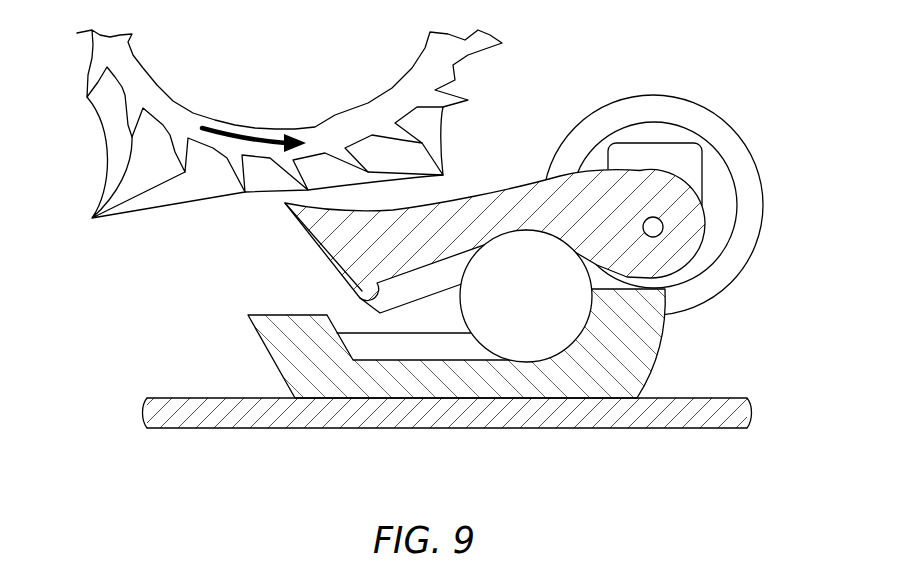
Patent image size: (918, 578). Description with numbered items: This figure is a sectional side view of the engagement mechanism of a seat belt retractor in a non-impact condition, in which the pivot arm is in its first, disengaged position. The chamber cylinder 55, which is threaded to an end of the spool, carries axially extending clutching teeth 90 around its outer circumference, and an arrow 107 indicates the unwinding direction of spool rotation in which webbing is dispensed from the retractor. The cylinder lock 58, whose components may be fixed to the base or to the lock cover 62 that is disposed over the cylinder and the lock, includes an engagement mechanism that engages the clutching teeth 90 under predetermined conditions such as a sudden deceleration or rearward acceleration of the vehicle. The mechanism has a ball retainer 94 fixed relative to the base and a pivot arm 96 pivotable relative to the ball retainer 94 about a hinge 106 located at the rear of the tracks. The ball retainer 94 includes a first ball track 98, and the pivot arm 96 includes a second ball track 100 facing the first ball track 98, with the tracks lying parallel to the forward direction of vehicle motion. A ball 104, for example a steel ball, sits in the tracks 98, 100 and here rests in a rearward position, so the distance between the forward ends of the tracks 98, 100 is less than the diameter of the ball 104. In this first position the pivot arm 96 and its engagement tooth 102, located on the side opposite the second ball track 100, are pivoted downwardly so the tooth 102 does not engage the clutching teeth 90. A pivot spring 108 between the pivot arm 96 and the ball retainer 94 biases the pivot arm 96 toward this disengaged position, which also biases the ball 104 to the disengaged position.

The chamber cylinder 55 is at (153, 72).
The cylinder lock 58 is at (660, 37).
The lock cover 62 is at (687, 430).
The clutching teeth 90 is at (270, 165).
The ball retainer 94 is at (277, 370).
The pivot arm 96 is at (511, 185).
The first ball track 98 is at (360, 360).
The second ball track 100 is at (360, 297).
The engagement tooth 102 is at (293, 203).
The ball 104 is at (585, 328).
The hinge 106 is at (663, 228).
The arrow 107 is at (241, 135).
The pivot spring 108 is at (727, 123).